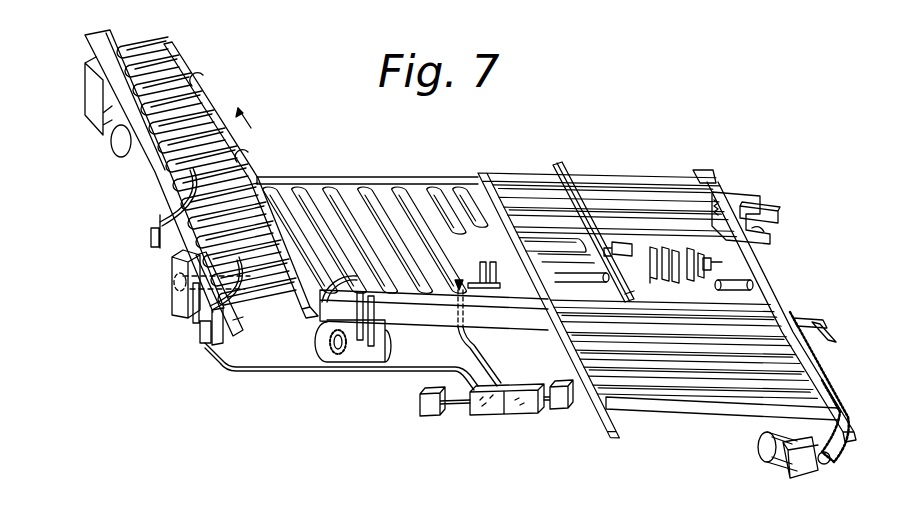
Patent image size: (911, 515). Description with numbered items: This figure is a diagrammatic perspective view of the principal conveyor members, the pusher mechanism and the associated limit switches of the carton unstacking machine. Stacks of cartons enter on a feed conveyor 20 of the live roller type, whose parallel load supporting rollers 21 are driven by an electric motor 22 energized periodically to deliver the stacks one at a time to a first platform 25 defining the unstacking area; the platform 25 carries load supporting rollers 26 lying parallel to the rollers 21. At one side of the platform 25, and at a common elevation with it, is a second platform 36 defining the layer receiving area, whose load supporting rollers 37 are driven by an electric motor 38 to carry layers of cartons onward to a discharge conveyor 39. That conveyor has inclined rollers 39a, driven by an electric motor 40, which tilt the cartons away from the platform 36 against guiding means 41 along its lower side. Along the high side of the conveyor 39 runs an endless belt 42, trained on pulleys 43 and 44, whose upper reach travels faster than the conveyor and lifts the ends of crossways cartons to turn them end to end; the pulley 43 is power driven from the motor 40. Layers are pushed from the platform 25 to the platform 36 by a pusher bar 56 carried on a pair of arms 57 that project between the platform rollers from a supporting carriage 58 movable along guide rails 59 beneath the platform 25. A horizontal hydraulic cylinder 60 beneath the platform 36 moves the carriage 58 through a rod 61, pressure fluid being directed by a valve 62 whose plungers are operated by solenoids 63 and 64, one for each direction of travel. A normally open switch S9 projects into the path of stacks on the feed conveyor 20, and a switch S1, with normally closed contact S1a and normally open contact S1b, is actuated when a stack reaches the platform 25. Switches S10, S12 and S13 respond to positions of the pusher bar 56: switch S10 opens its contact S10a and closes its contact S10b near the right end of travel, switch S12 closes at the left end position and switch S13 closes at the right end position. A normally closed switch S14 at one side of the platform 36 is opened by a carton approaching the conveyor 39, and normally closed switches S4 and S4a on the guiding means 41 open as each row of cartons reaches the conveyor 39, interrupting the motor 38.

The feed conveyor 20 is at (667, 290).
The load supporting rollers 21 is at (697, 388).
The electric motor 22 is at (770, 440).
The first platform 25 is at (613, 164).
The load supporting rollers 26 is at (528, 212).
The second platform 36 is at (402, 229).
The load supporting rollers 37 is at (337, 186).
The electric motor 38 is at (378, 357).
The discharge conveyor 39 is at (176, 156).
The rollers 39a is at (258, 186).
The electric motor 40 is at (112, 132).
The guiding means 41 is at (243, 323).
The endless belt 42 is at (218, 100).
The pulley 43 is at (200, 78).
The pulley 44 is at (243, 156).
The pusher bar 56 is at (557, 166).
The arms 57 is at (589, 247).
The supporting carriage 58 is at (636, 262).
The guide rails 59 is at (571, 268).
The cylinder 60 is at (386, 190).
The rod 61 is at (472, 280).
The valve 62 is at (503, 414).
The solenoid 63 is at (436, 418).
The solenoid 64 is at (563, 412).
The switch S1 is at (753, 197).
The normally closed contact S1a is at (768, 207).
The normally open contact S1b is at (764, 232).
The switch S4 is at (203, 343).
The switch S4a is at (150, 246).
The switch S9 is at (823, 327).
The switch S10 is at (660, 252).
The normally closed contact S10a is at (656, 256).
The normally open contact S10b is at (678, 256).
The switch S12 is at (500, 278).
The switch S13 is at (717, 267).
The switch S14 is at (378, 325).